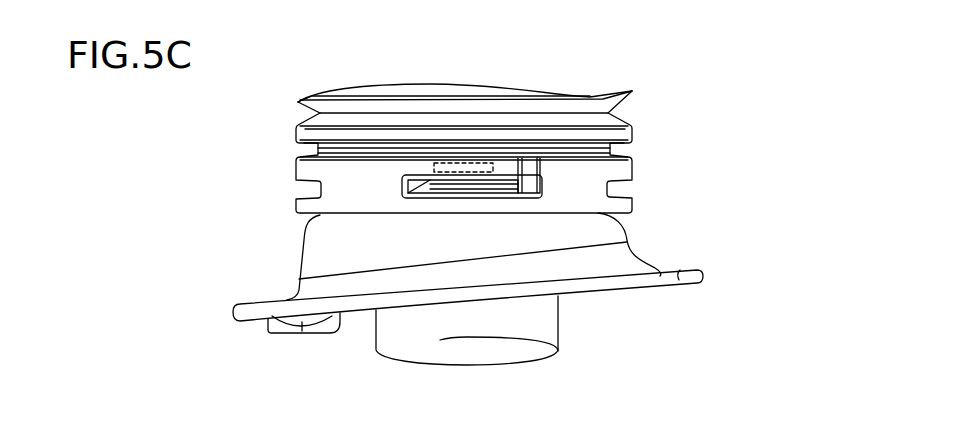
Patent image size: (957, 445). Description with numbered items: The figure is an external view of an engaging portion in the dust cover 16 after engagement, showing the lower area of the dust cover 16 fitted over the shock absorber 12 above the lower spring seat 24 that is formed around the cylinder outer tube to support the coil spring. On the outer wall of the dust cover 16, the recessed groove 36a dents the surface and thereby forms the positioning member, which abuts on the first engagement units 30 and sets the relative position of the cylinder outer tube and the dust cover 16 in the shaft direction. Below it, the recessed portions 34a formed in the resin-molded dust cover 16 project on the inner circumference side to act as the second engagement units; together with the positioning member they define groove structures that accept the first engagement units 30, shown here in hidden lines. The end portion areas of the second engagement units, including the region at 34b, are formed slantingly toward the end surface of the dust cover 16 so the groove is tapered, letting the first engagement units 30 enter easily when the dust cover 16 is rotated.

The shock absorber 12 is at (566, 325).
The dust cover 16 is at (632, 91).
The lower spring seat 24 is at (682, 265).
The first engagement units 30 is at (455, 166).
The recessed portions 34a is at (445, 183).
The slot portion 34b is at (497, 165).
The recessed groove 36a is at (312, 147).